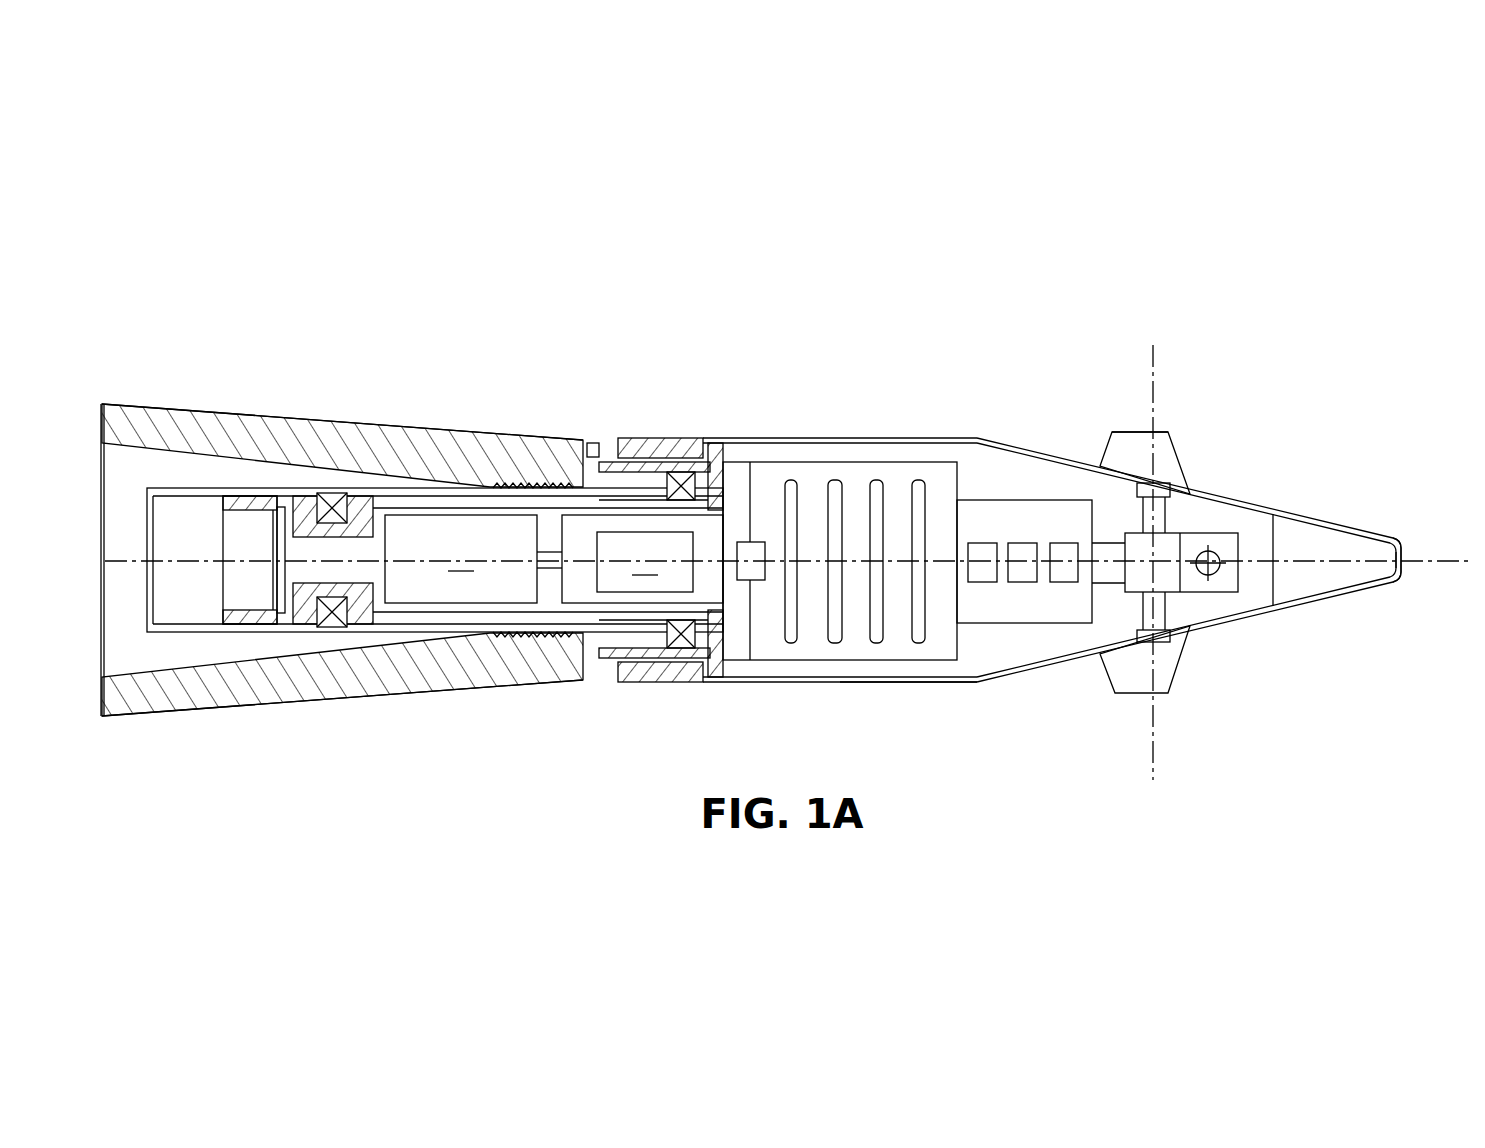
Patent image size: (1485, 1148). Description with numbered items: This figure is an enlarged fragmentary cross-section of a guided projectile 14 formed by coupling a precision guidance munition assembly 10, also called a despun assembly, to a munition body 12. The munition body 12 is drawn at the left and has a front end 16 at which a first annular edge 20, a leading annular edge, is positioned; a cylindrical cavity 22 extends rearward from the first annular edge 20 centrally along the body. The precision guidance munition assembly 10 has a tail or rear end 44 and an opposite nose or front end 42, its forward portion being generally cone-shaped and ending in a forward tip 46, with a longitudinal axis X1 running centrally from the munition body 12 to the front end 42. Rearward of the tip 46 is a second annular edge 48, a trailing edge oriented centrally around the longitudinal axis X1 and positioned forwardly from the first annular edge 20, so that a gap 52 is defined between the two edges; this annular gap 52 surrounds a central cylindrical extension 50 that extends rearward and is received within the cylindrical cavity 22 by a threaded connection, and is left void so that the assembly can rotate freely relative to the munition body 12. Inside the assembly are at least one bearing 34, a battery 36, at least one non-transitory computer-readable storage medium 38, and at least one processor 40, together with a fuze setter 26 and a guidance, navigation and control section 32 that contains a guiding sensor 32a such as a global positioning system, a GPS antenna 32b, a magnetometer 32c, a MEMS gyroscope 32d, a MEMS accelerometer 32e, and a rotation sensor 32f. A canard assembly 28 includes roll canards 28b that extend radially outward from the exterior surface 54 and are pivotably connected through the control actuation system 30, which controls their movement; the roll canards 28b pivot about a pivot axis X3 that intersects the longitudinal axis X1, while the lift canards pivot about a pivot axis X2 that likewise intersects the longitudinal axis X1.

The precision guidance munition assembly 10 is at (948, 436).
The munition body 12 is at (194, 401).
The guided projectile 14 is at (1063, 226).
The front end 16 is at (423, 427).
The first annular edge 20 is at (572, 471).
The cylindrical cavity 22 is at (240, 470).
The fuze setter 26 is at (1334, 519).
The canard assembly 28 is at (1178, 426).
The roll canard 28b is at (1112, 447).
The control actuation system 30 is at (1200, 528).
The guidance, navigation and control section 32 is at (858, 474).
The guiding sensor 32a is at (768, 556).
The GPS antenna 32b is at (730, 438).
The magnetometer 32c is at (985, 553).
The MEMS gyroscope 32d is at (1025, 585).
The MEMS accelerometer 32e is at (1065, 585).
The rotation sensor 32f is at (628, 447).
The bearing 34 is at (338, 496).
The battery 36 is at (473, 559).
The non-transitory computer-readable storage medium 38 is at (642, 559).
The processor 40 is at (793, 488).
The front end 42 is at (1415, 581).
The rear end 44 is at (133, 613).
The forward tip 46 is at (1400, 543).
The second annular edge 48 is at (608, 686).
The central cylindrical extension 50 is at (300, 633).
The gap 52 is at (608, 452).
The exterior surface 54 is at (920, 684).
The longitudinal axis X1 is at (1443, 562).
The pivot axis X2 is at (1214, 566).
The pivot axis X3 is at (1153, 353).